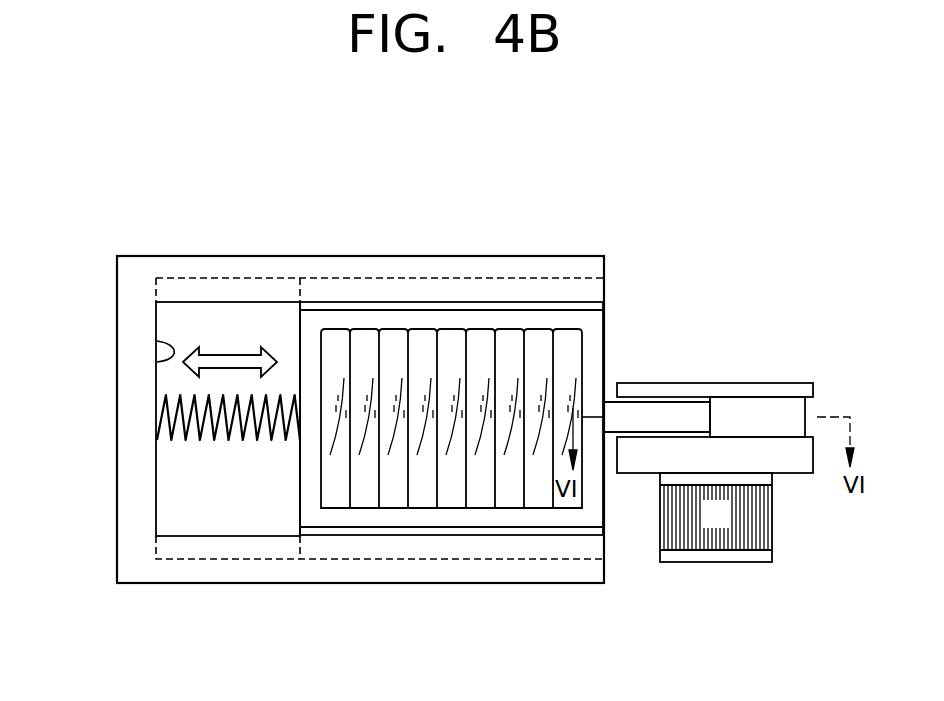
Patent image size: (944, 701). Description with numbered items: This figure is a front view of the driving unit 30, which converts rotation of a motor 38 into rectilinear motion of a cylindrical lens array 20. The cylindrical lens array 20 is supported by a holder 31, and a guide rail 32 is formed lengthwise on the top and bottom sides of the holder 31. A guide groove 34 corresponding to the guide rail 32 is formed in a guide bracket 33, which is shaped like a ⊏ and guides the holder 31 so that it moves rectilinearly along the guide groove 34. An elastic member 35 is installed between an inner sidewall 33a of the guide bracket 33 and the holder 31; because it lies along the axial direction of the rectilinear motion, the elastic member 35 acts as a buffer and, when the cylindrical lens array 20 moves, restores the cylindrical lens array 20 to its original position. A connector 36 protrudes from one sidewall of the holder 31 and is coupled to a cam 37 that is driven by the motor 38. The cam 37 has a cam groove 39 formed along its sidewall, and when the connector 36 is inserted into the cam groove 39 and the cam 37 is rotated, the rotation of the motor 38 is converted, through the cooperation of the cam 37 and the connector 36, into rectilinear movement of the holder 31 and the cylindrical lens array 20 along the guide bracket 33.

The cylindrical lens array 20 is at (533, 490).
The driving unit 30 is at (737, 366).
The holder 31 is at (490, 305).
The guide rail 32 is at (360, 292).
The guide bracket 33 is at (433, 575).
The inner sidewall 33a is at (160, 362).
The guide groove 34 is at (212, 290).
The elastic member 35 is at (232, 445).
The connector 36 is at (622, 383).
The cam 37 is at (718, 390).
The motor 38 is at (752, 518).
The cam groove 39 is at (807, 412).